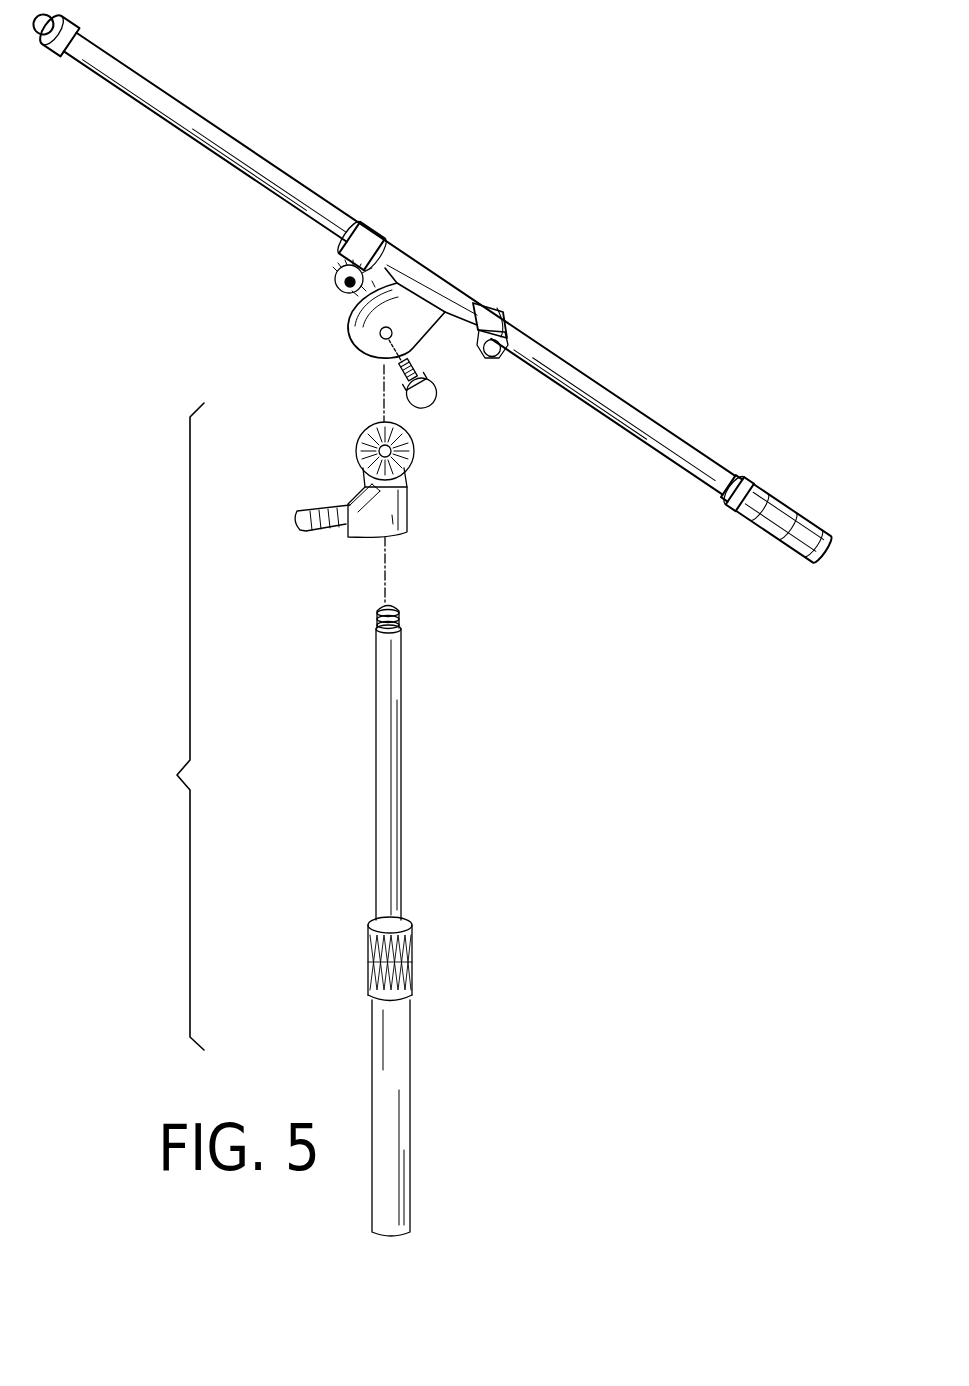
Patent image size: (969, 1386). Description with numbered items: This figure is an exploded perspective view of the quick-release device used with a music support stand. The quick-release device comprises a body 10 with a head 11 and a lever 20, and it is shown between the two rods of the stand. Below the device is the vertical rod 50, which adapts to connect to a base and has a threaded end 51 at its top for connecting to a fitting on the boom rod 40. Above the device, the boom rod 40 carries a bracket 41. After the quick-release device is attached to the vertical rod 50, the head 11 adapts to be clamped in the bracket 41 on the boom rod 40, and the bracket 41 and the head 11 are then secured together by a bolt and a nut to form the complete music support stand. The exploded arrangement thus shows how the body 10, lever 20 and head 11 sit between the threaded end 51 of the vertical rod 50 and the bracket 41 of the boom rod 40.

The boom rod 40 is at (590, 390).
The bracket 41 is at (412, 321).
The body 10 is at (381, 477).
The head 11 is at (415, 453).
The lever 20 is at (299, 512).
The vertical rod 50 is at (432, 900).
The threaded end 51 is at (393, 603).